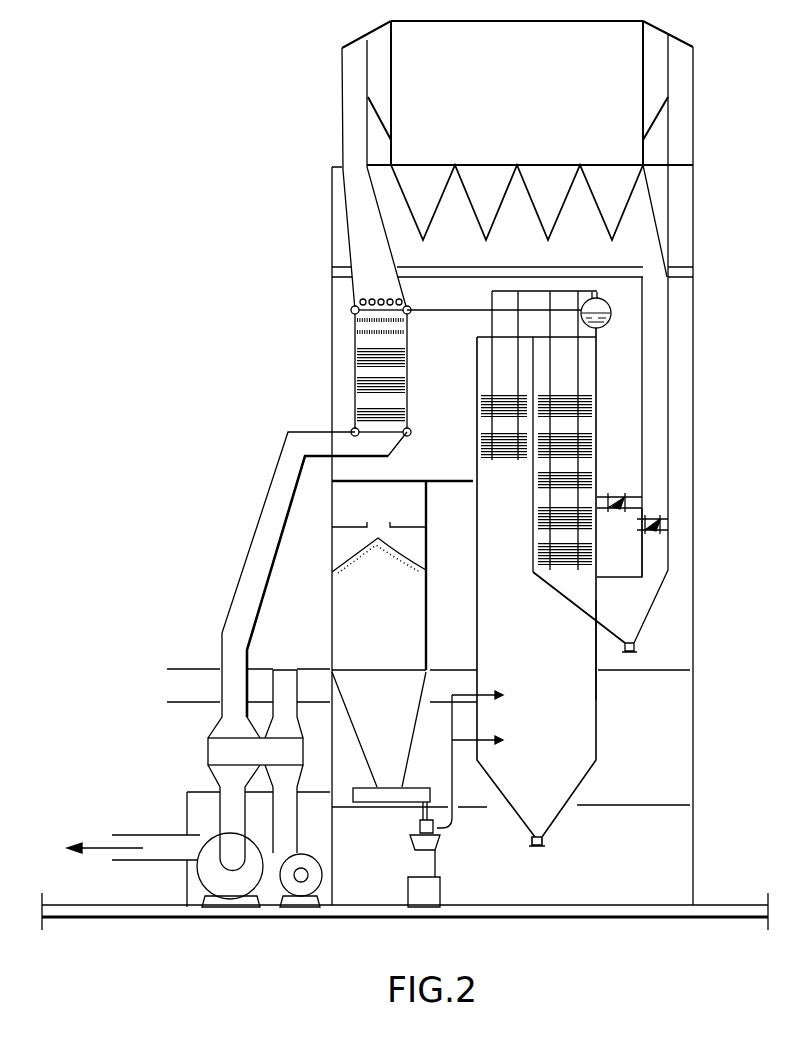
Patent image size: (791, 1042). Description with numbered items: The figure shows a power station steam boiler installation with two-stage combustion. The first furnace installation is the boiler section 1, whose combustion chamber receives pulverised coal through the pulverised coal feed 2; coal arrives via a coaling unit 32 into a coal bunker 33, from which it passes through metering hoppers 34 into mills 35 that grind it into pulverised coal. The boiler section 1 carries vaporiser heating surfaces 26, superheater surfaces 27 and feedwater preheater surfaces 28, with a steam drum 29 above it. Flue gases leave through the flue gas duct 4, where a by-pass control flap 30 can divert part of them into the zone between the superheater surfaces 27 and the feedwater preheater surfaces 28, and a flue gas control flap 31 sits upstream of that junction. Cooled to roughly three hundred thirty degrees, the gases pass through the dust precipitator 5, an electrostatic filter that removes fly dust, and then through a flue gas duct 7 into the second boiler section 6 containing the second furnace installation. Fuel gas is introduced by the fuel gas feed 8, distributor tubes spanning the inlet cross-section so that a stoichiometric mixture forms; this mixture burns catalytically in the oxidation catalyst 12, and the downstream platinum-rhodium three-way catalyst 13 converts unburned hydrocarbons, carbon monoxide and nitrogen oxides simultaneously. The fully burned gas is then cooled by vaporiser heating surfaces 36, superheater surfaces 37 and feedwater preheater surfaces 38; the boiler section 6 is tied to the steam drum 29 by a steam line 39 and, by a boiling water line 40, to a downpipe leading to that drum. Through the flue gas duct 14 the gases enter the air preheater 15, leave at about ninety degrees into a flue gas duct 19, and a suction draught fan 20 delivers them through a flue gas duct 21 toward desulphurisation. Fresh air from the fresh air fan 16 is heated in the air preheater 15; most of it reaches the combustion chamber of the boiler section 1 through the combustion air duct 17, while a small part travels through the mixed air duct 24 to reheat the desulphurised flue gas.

The boiler section 1 is at (573, 725).
The pulverised coal feed 2 is at (453, 778).
The flue gas duct 4 is at (655, 352).
The dust precipitator 5 is at (417, 82).
The second boiler section 6 is at (345, 372).
The flue gas duct 7 is at (365, 232).
The fuel gas feed 8 is at (358, 297).
The oxidation catalyst 12 is at (357, 320).
The multi-functional three-way catalyst 13 is at (357, 332).
The flue gas duct 14 is at (258, 562).
The air preheater 15 is at (222, 750).
The fresh air fan 16 is at (298, 892).
The combustion air duct 17 is at (443, 683).
The flue gas duct 19 is at (230, 815).
The suction draught fan 20 is at (232, 890).
The flue gas duct 21 is at (160, 847).
The mixed air duct 24 is at (195, 683).
The vaporiser heating surfaces 26 is at (598, 690).
The superheater surfaces 27 is at (480, 442).
The feedwater preheater surfaces 28 is at (534, 524).
The steam drum 29 is at (600, 303).
The by-pass control flap 30 is at (640, 500).
The flue gas control flap 31 is at (668, 527).
The coaling unit 32 is at (418, 505).
The coal bunker 33 is at (417, 597).
The metering hoppers 34 is at (420, 790).
The mills 35 is at (418, 862).
The vaporiser heating surfaces 36 is at (400, 386).
The superheater surfaces 37 is at (400, 356).
The feedwater preheater surfaces 38 is at (400, 415).
The steam line 39 is at (438, 310).
The boiling water line 40 is at (414, 434).